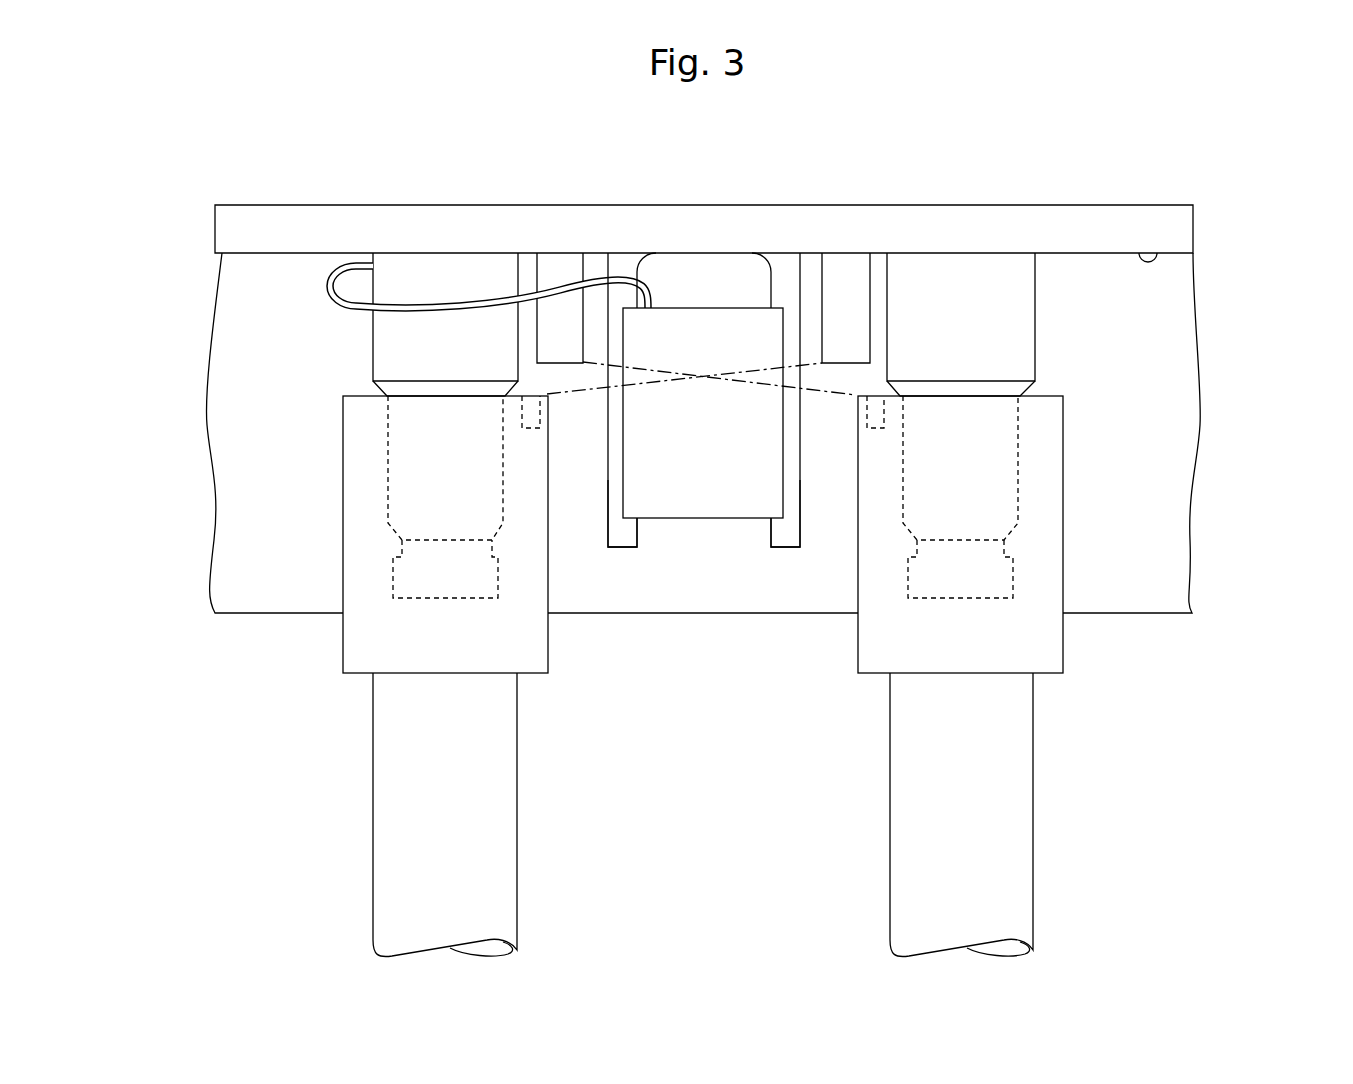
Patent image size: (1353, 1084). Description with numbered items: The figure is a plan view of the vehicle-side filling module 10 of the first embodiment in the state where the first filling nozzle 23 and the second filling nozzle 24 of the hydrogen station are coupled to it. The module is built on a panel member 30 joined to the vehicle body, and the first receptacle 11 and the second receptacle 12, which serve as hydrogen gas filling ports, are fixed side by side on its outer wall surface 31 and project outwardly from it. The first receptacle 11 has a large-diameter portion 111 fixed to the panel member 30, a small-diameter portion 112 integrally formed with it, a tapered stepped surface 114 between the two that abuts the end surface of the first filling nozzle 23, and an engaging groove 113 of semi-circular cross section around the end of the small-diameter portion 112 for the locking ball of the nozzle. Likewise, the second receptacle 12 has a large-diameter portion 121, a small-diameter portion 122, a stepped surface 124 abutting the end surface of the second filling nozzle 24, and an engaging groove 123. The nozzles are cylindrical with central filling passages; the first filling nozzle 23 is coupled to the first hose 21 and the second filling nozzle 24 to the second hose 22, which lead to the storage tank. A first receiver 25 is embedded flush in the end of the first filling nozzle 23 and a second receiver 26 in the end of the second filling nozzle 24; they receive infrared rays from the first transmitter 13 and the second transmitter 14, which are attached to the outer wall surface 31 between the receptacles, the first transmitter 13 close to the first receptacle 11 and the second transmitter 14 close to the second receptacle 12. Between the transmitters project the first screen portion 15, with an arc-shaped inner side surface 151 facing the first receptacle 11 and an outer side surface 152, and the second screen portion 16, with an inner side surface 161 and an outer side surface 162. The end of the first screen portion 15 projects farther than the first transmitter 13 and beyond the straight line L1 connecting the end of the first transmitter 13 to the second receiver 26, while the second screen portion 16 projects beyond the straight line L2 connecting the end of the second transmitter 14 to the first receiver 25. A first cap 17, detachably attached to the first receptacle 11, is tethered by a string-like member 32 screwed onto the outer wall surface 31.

The filling module 10 is at (384, 206).
The panel member 30 is at (1078, 235).
The outer wall surface 31 is at (1141, 258).
The string-like member 32 is at (463, 293).
The first transmitter 13 is at (558, 272).
The second transmitter 14 is at (843, 272).
The first receptacle 11 is at (297, 425).
The large-diameter portion 111 is at (415, 348).
The stepped surface 114 is at (412, 390).
The small-diameter portion 112 is at (428, 472).
The engaging groove 113 is at (413, 548).
The second receptacle 12 is at (1107, 425).
The large-diameter portion 121 is at (990, 348).
The stepped surface 124 is at (995, 390).
The small-diameter portion 122 is at (980, 473).
The engaging groove 123 is at (990, 548).
The first screen portion 15 is at (622, 540).
The inner side surface 151 is at (608, 486).
The outer side surface 152 is at (652, 255).
The second screen portion 16 is at (785, 540).
The inner side surface 161 is at (800, 486).
The outer side surface 162 is at (753, 255).
The first cap 17 is at (712, 488).
The straight line L1 is at (743, 385).
The straight line L2 is at (652, 385).
The first filling nozzle 23 is at (363, 650).
The second filling nozzle 24 is at (1043, 650).
The first receiver 25 is at (531, 428).
The second receiver 26 is at (874, 428).
The first hose 21 is at (405, 832).
The second hose 22 is at (1000, 832).